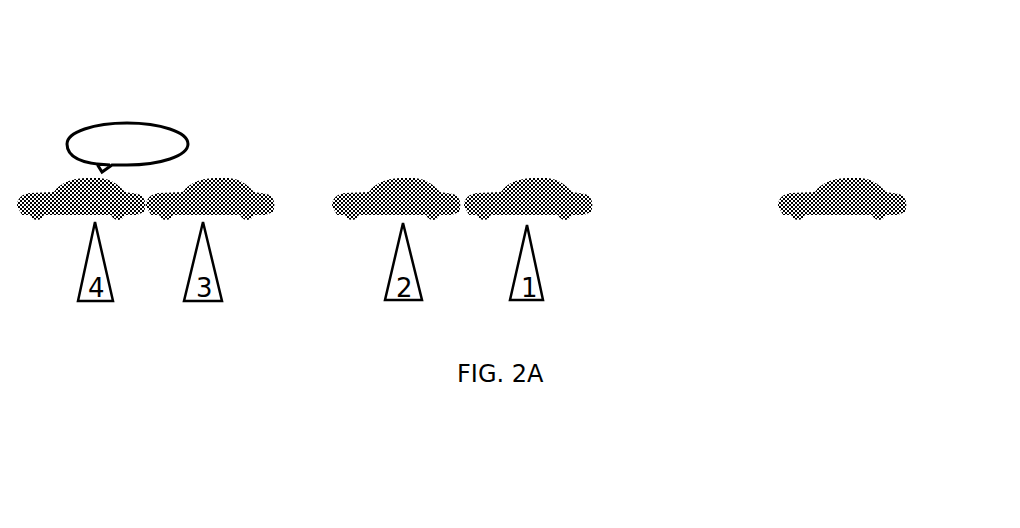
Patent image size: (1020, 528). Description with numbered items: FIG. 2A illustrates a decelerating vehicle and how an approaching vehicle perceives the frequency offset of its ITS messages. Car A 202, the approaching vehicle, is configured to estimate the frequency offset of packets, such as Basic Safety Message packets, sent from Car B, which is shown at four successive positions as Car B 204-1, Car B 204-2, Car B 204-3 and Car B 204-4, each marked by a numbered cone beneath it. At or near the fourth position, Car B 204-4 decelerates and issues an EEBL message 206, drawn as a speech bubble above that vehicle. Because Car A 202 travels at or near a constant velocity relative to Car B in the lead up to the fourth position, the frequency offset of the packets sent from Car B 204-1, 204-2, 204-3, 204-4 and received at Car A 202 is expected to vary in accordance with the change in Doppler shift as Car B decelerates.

The Car A 202 is at (878, 184).
The Car B 204-1 is at (566, 186).
The Car B 204-2 is at (441, 192).
The Car B 204-3 is at (250, 184).
The Car B 204-4 is at (47, 192).
The EEBL message 206 is at (152, 124).